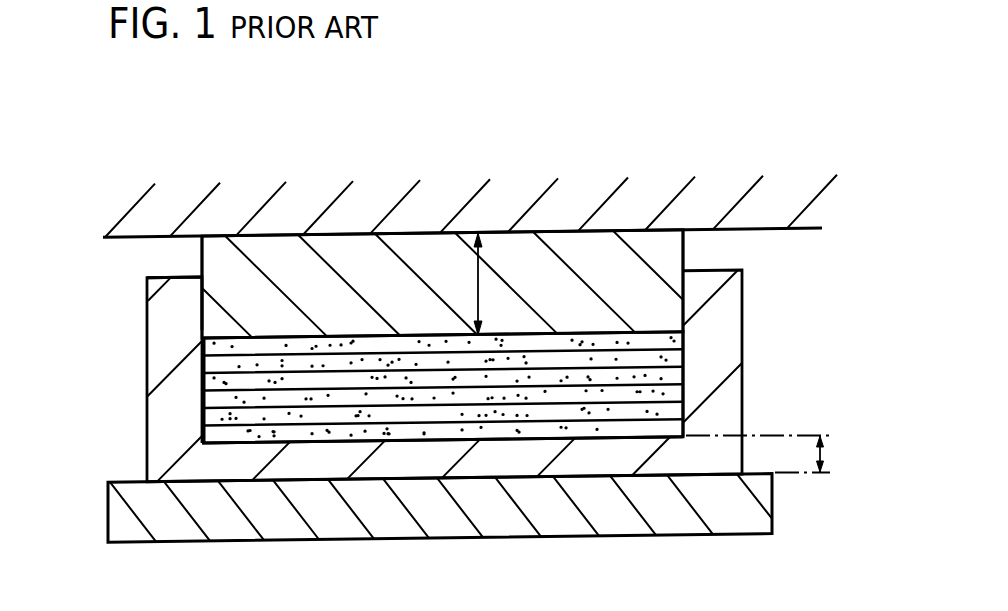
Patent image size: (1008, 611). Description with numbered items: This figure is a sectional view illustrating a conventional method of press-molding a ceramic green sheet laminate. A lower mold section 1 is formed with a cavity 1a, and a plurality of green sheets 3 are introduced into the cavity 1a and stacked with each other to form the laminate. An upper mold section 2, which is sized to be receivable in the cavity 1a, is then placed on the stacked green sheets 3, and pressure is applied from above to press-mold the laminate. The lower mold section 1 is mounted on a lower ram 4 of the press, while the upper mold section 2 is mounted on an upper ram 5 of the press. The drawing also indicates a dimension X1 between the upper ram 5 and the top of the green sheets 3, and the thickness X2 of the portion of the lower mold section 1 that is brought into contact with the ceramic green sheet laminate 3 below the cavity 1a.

The lower mold section 1 is at (743, 394).
The cavity 1a is at (202, 327).
The upper mold section 2 is at (623, 275).
The green sheets 3 is at (680, 358).
The lower ram 4 is at (668, 518).
The upper ram 5 is at (768, 231).
The dimension X1 is at (478, 291).
The thickness X2 is at (786, 455).